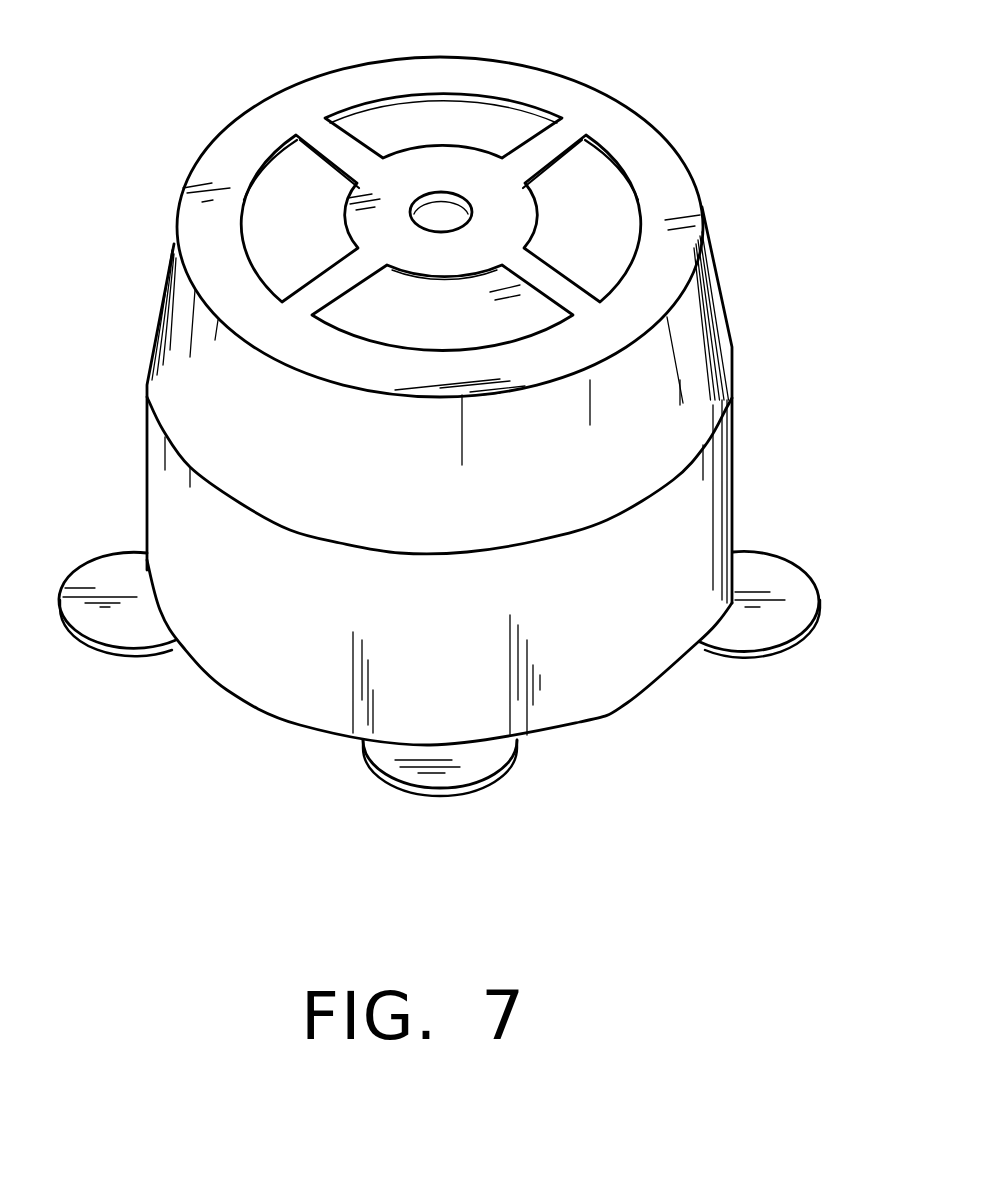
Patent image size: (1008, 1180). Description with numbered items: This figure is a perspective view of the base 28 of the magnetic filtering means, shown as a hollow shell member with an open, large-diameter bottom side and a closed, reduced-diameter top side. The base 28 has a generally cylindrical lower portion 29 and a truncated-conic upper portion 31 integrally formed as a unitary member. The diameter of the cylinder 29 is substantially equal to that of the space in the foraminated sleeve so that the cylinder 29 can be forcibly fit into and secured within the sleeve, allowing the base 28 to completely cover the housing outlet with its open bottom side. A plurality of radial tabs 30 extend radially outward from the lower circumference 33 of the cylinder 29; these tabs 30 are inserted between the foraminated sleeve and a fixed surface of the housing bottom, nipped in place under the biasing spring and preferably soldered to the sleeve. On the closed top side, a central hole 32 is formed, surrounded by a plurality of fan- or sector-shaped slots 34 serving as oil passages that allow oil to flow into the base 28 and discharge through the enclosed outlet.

The base 28 is at (735, 105).
The cylindrical lower portion 29 is at (735, 478).
The radial tabs 30 is at (775, 612).
The truncated-conic upper portion 31 is at (732, 343).
The central hole 32 is at (442, 217).
The lower circumference 33 is at (627, 703).
The fan- or sector-shaped slots 34 is at (602, 228).